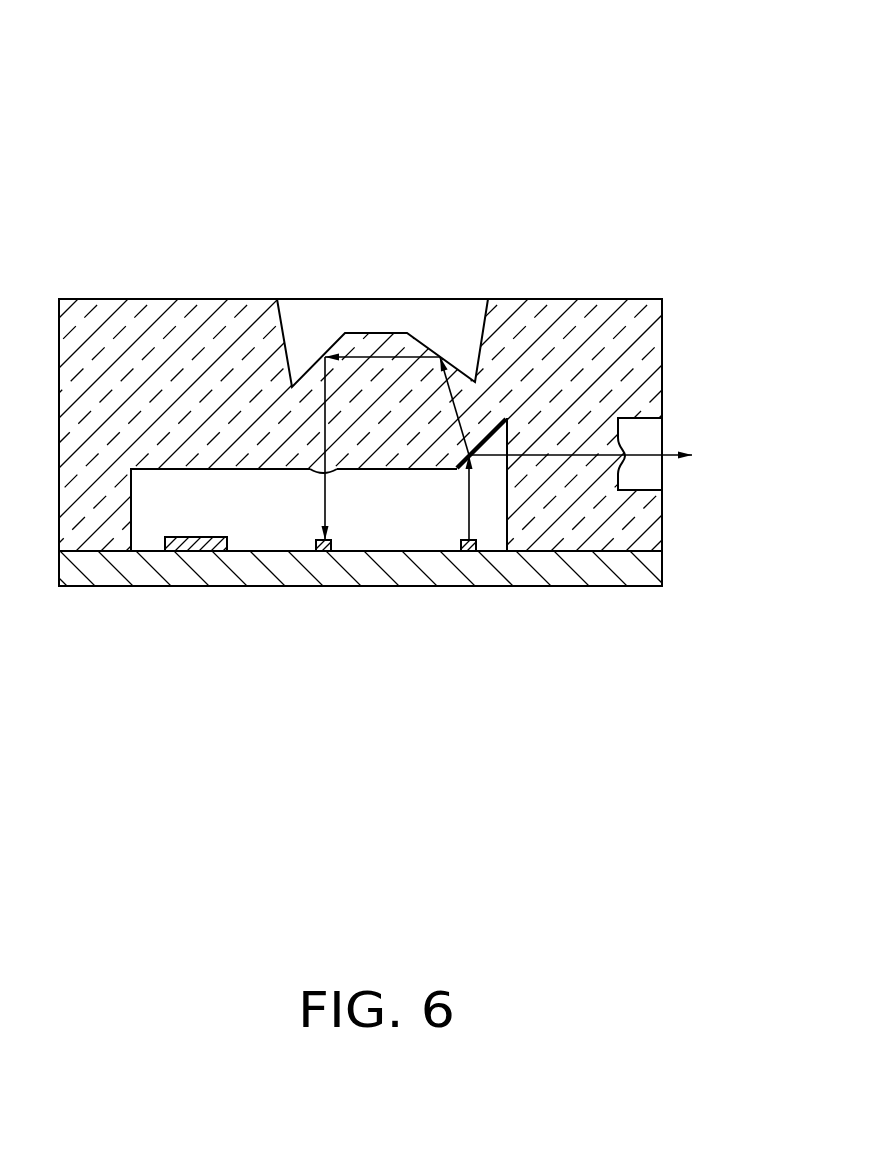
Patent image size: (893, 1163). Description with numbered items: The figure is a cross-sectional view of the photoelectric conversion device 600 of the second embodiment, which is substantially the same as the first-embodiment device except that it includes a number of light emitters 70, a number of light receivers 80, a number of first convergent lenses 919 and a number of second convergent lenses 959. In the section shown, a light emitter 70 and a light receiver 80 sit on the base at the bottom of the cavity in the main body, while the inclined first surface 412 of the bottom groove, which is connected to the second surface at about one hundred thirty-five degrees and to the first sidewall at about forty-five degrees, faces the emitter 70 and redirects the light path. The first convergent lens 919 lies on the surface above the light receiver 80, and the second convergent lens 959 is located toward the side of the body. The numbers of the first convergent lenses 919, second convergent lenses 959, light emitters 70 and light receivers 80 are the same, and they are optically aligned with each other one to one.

The photoelectric conversion device 600 is at (368, 47).
The second convergent lens 959 is at (623, 462).
The first convergent lens 919 is at (316, 472).
The light receiver 80 is at (323, 552).
The light emitter 70 is at (466, 552).
The first surface 412 is at (477, 442).